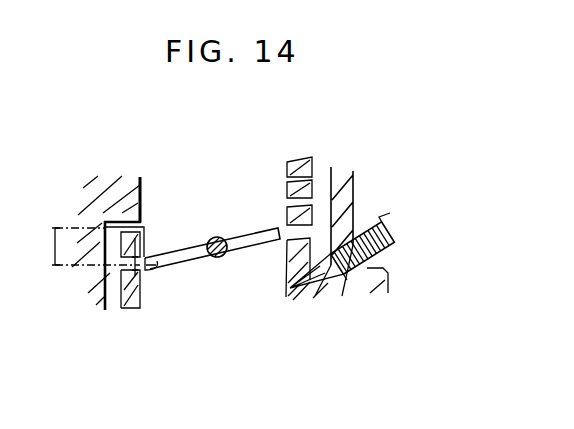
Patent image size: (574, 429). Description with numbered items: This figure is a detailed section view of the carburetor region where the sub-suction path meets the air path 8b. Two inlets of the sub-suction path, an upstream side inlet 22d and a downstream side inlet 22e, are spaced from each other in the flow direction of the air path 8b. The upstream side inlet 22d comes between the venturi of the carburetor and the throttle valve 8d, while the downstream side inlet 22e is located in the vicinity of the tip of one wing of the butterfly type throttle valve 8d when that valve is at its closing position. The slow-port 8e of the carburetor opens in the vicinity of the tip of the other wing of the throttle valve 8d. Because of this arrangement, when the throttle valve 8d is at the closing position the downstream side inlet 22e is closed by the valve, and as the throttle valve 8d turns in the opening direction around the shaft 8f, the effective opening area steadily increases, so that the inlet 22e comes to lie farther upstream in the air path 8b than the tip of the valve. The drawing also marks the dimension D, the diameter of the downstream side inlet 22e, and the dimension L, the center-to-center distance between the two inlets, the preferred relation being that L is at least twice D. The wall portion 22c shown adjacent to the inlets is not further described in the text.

The holder block 22c is at (60, 287).
The upstream side inlet 22d is at (140, 208).
The downstream side inlet 22e is at (130, 306).
The center-to-center distance L is at (55, 247).
The diameter of the downstream side inlet D is at (152, 266).
The throttle valve 8d is at (252, 242).
The shaft 8f is at (213, 258).
The air path 8b is at (270, 188).
The slow-port 8e is at (287, 292).